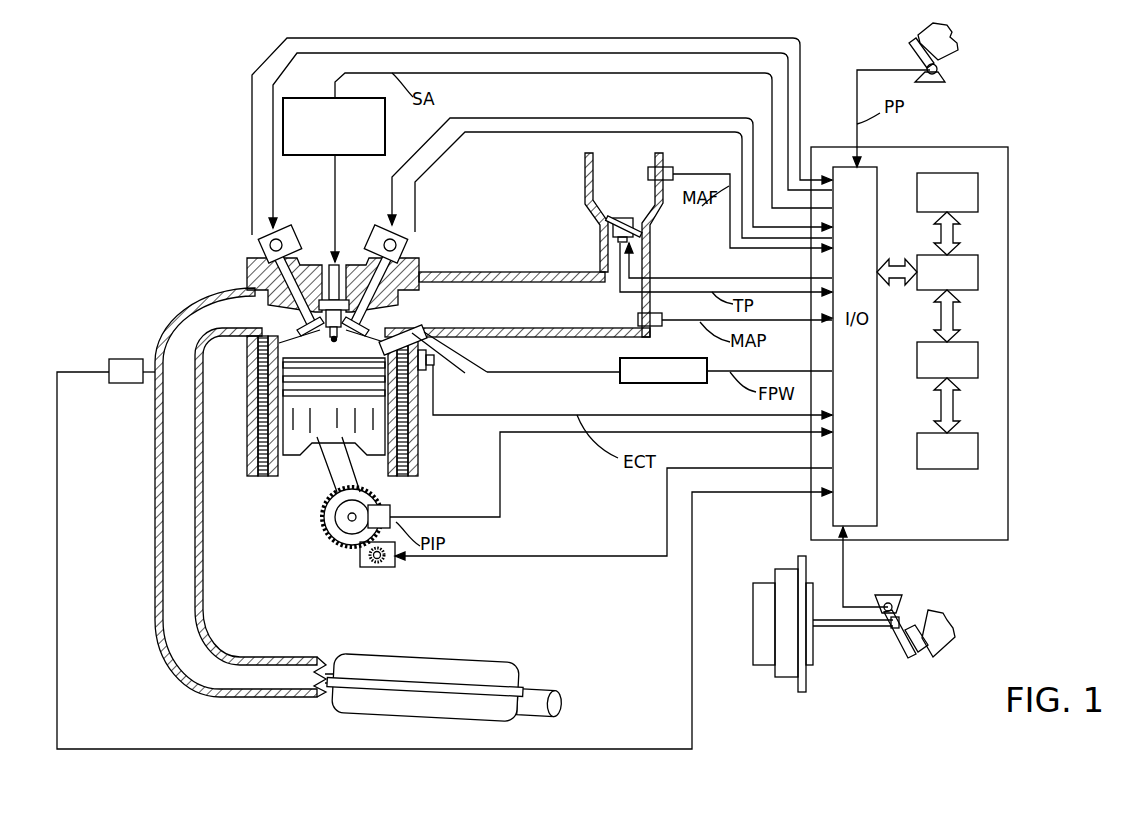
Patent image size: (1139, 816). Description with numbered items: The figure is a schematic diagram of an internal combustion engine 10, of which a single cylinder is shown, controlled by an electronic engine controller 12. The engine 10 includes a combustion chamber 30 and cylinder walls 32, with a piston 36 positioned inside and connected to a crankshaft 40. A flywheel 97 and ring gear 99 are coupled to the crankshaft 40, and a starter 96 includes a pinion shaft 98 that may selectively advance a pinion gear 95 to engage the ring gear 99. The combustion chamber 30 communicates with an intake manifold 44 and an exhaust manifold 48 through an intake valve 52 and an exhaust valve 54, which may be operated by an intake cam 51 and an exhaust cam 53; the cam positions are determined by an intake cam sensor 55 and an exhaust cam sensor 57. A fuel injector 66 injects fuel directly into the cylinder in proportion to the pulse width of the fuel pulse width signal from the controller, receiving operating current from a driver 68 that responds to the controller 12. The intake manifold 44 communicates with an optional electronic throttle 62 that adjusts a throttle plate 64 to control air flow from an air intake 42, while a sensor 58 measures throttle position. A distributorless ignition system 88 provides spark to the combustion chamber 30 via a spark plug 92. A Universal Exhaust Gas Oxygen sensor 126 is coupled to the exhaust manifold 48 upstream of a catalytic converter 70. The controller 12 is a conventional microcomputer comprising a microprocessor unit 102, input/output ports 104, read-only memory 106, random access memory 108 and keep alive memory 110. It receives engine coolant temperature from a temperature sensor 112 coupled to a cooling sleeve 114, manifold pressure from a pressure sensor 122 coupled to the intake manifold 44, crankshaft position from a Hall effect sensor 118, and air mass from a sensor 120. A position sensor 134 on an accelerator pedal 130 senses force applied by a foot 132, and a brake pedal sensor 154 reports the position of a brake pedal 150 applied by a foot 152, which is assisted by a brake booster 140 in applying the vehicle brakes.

The internal combustion engine 10 is at (181, 212).
The electronic engine controller 12 is at (1000, 147).
The combustion chamber 30 is at (330, 343).
The cylinder walls 32 is at (285, 472).
The piston 36 is at (319, 432).
The crankshaft 40 is at (335, 545).
The air intake 42 is at (636, 194).
The intake manifold 44 is at (584, 310).
The exhaust manifold 48 is at (236, 319).
The intake cam 51 is at (373, 222).
The intake valve 52 is at (372, 315).
The exhaust cam 53 is at (291, 222).
The exhaust valve 54 is at (262, 284).
The intake cam sensor 55 is at (404, 249).
The exhaust cam sensor 57 is at (262, 242).
The throttle position sensor 58 is at (607, 243).
The electronic throttle 62 is at (641, 231).
The throttle plate 64 is at (612, 226).
The fuel injector 66 is at (430, 352).
The driver 68 is at (640, 384).
The catalytic converter 70 is at (345, 652).
The distributorless ignition system 88 is at (297, 97).
The spark plug 92 is at (338, 256).
The pinion gear 95 is at (383, 568).
The starter 96 is at (390, 567).
The flywheel 97 is at (327, 527).
The pinion shaft 98 is at (370, 568).
The ring gear 99 is at (347, 557).
The microprocessor unit 102 is at (978, 272).
The input/output ports 104 is at (877, 173).
The read-only memory 106 is at (978, 192).
The random access memory 108 is at (978, 357).
The keep alive memory 110 is at (978, 448).
The temperature sensor 112 is at (445, 380).
The cooling sleeve 114 is at (407, 435).
The Hall effect sensor 118 is at (392, 508).
The air mass sensor 120 is at (666, 167).
The pressure sensor 122 is at (655, 329).
The Universal Exhaust Gas Oxygen sensor 126 is at (109, 366).
The accelerator pedal 130 is at (913, 48).
The foot 132 is at (960, 38).
The position sensor 134 is at (942, 72).
The brake booster 140 is at (753, 660).
The brake pedal 150 is at (912, 640).
The foot 152 is at (943, 618).
The brake pedal sensor 154 is at (885, 606).